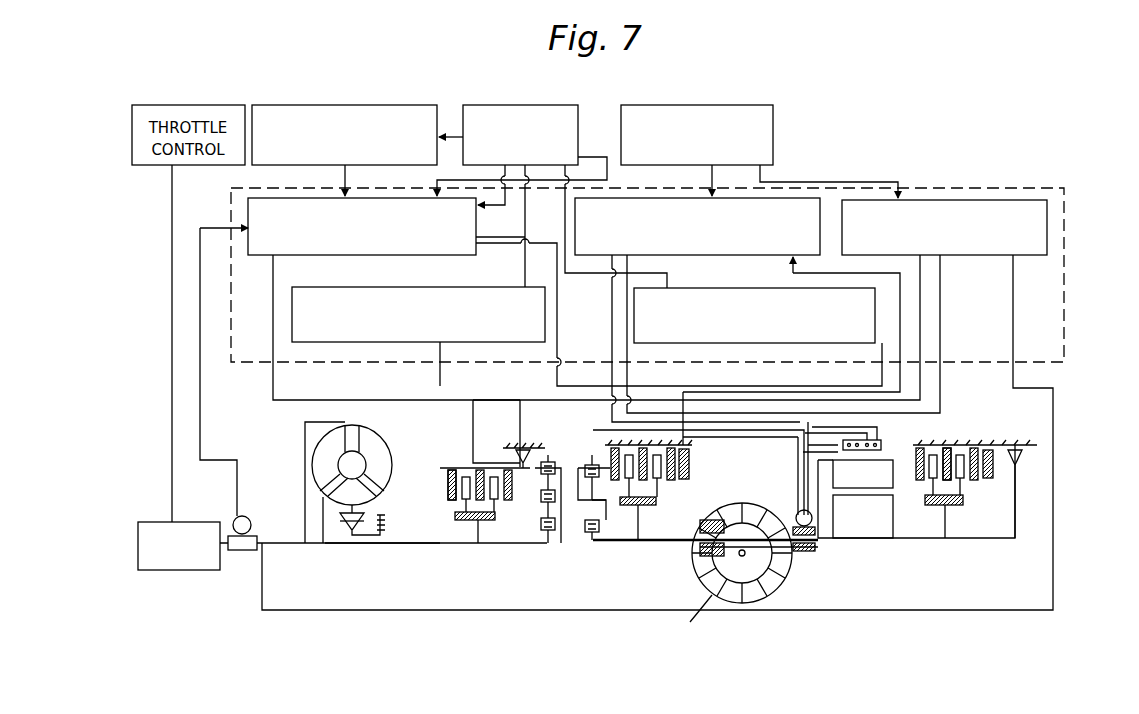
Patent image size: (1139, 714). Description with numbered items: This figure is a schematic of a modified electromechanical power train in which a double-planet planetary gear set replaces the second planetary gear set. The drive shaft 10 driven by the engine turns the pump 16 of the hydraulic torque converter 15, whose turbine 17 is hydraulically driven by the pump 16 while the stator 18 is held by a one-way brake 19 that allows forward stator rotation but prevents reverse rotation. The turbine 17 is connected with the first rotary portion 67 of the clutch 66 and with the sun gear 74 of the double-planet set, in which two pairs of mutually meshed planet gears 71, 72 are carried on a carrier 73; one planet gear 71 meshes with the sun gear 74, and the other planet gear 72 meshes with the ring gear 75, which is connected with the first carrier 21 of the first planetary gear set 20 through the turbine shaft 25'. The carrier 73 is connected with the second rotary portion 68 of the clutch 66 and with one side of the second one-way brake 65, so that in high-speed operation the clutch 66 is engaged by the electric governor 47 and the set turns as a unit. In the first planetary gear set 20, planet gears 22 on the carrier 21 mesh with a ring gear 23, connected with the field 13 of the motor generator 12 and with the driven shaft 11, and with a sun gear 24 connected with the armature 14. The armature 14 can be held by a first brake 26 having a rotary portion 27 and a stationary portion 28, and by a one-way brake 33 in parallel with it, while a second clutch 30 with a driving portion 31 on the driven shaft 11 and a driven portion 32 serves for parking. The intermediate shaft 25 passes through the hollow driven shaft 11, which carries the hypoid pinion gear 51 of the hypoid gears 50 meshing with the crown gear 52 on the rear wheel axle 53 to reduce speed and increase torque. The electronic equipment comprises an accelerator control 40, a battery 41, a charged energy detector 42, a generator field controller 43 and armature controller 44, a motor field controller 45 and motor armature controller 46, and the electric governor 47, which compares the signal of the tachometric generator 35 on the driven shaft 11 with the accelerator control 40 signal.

The drive shaft 10 is at (222, 560).
The driven shaft 11 is at (815, 551).
The motor generator 12 is at (870, 543).
The field element 13 is at (893, 478).
The armature 14 is at (893, 515).
The hydraulic torque converter 15 is at (356, 533).
The pump 16 is at (392, 455).
The turbine 17 is at (318, 458).
The stator 18 is at (372, 494).
The one-way brake 19 is at (342, 521).
The planetary gear set 20 is at (610, 601).
The carrier 21 is at (606, 510).
The planet gears 22 is at (598, 470).
The transistor 23 is at (588, 462).
The sun gear 24 is at (596, 536).
The intermediate shaft 25 is at (705, 560).
The turbine shaft 25' is at (436, 563).
The first brake 26 is at (638, 545).
The rotary portion 27 is at (656, 501).
The stationary portion 28 is at (640, 450).
The second clutch 30 is at (948, 520).
The driving portion 31 is at (963, 500).
The driven portion 32 is at (947, 445).
The one-way brake 33 is at (1022, 460).
The second governor 35 is at (796, 512).
The accelerator control 40 is at (693, 105).
The battery 41 is at (507, 105).
The charged energy detector 42 is at (345, 105).
The field controller 43 is at (262, 257).
The armature controller 44 is at (485, 287).
The motor field controller 45 is at (822, 222).
The motor armature controller 46 is at (728, 288).
The electric governor 47 is at (960, 257).
The hypoid gears 50 is at (742, 603).
The hypoid pinion gear 51 is at (700, 556).
The crown gear 52 is at (686, 617).
The rear wheel axle 53 is at (745, 555).
The second one-way brake 65 is at (466, 420).
The clutch 66 is at (492, 545).
The first rotary portion 67 is at (495, 516).
The second rotary portion 68 is at (455, 468).
The planet gear 71 is at (556, 500).
The planet gear 72 is at (551, 460).
The carrier 73 is at (540, 532).
The sun gear 74 is at (552, 545).
The ring gear 75 is at (515, 440).